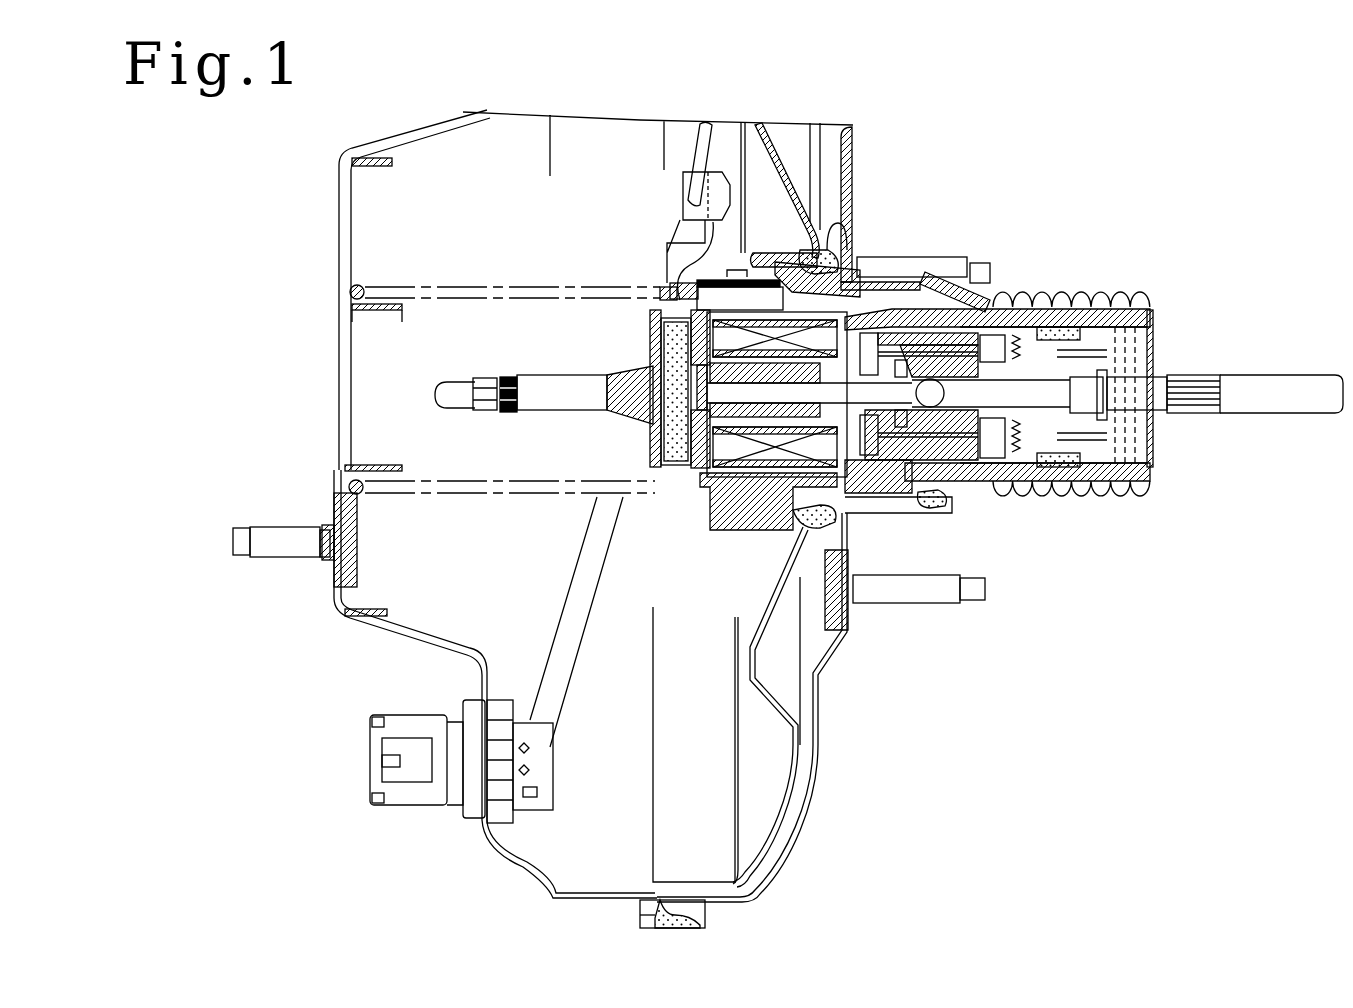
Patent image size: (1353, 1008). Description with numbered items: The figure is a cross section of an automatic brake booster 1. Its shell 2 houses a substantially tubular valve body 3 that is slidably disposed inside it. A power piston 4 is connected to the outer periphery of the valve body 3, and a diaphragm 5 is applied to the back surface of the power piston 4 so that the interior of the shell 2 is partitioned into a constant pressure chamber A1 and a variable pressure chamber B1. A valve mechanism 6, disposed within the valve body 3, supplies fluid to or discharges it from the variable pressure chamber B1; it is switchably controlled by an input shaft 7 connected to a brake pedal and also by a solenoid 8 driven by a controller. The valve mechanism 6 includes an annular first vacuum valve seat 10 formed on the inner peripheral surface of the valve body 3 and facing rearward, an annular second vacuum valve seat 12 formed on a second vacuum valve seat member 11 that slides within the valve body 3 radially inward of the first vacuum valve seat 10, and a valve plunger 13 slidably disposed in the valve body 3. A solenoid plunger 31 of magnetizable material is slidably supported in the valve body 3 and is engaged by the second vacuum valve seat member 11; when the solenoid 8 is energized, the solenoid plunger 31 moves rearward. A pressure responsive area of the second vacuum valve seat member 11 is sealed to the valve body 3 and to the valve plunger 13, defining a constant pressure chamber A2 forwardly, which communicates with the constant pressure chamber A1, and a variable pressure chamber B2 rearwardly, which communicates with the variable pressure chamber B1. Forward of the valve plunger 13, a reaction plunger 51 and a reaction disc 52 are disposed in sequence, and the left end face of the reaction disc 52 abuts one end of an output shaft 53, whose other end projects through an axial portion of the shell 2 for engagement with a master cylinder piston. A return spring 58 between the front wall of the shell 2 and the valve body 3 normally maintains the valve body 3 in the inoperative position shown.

The automatic brake booster 1 is at (956, 147).
The shell 2 is at (418, 128).
The valve body 3 is at (1030, 292).
The power piston 4 is at (768, 703).
The diaphragm 5 is at (787, 707).
The valve mechanism 6 is at (1000, 440).
The input shaft 7 is at (1253, 372).
The solenoid 8 is at (727, 482).
The first vacuum valve seat 10 is at (978, 327).
The second vacuum valve seat member 11 is at (860, 430).
The second vacuum valve seat 12 is at (980, 325).
The valve plunger 13 is at (944, 392).
The solenoid plunger 31 is at (785, 392).
The reaction plunger 51 is at (697, 388).
The reaction disc 52 is at (673, 345).
The output shaft 53 is at (567, 400).
The return spring 58 is at (466, 497).
The constant pressure chamber A1 is at (630, 727).
The constant pressure chamber A2 is at (857, 333).
The variable pressure chamber B1 is at (790, 665).
The variable pressure chamber B2 is at (893, 357).